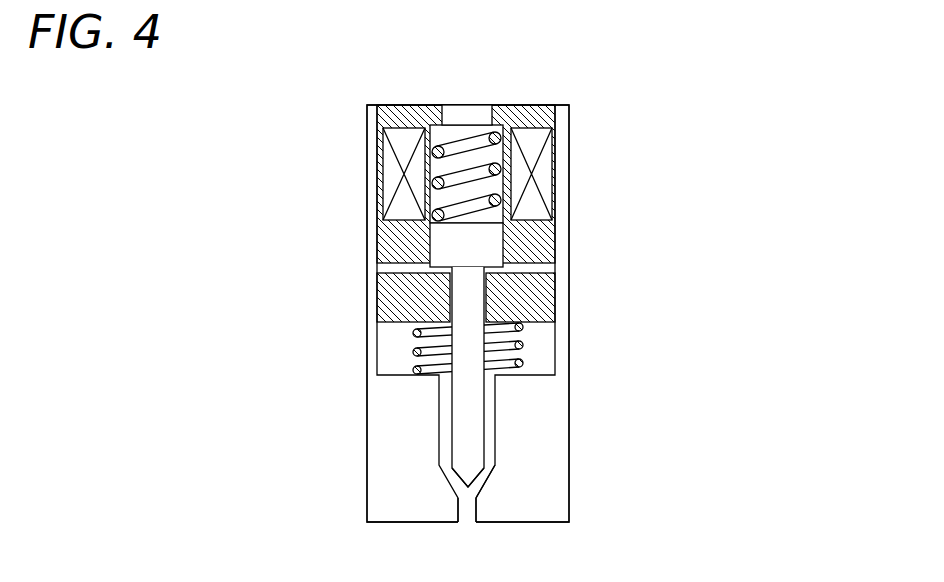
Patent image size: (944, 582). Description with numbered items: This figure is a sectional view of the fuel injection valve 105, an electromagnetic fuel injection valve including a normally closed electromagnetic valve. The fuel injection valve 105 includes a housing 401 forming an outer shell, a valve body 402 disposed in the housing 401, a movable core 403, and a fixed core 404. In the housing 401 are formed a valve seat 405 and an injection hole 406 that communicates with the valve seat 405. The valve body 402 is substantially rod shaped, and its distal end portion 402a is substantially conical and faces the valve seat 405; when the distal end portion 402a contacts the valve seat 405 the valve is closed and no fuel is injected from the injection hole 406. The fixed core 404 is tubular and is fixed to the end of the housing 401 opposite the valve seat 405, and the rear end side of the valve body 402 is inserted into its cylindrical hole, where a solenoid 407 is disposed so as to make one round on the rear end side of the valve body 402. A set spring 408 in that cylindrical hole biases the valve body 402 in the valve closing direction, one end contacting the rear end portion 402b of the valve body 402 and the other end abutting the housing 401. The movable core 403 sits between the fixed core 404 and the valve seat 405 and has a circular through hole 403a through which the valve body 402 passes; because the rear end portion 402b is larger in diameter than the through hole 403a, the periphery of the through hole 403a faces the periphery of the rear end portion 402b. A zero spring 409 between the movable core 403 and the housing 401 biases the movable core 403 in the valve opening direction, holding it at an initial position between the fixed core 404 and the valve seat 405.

The fuel injection valve 105 is at (521, 80).
The housing 401 is at (540, 462).
The valve body 402 is at (468, 405).
The distal end portion 402a is at (463, 488).
The rear end portion 402b is at (438, 248).
The movable core 403 is at (552, 300).
The through hole 403a is at (450, 302).
The fixed core 404 is at (535, 243).
The valve seat 405 is at (485, 488).
The injection hole 406 is at (467, 522).
The solenoid 407 is at (548, 179).
The set spring 408 is at (476, 139).
The zero spring 409 is at (525, 338).